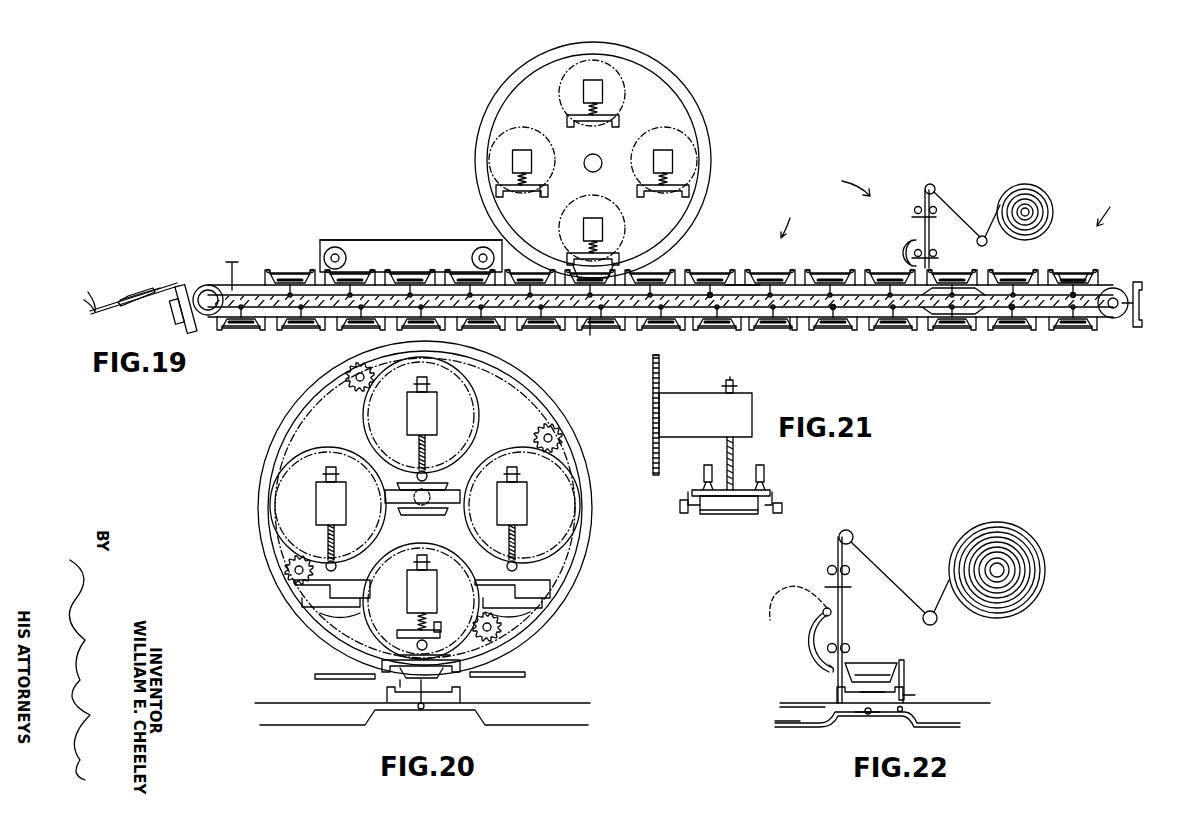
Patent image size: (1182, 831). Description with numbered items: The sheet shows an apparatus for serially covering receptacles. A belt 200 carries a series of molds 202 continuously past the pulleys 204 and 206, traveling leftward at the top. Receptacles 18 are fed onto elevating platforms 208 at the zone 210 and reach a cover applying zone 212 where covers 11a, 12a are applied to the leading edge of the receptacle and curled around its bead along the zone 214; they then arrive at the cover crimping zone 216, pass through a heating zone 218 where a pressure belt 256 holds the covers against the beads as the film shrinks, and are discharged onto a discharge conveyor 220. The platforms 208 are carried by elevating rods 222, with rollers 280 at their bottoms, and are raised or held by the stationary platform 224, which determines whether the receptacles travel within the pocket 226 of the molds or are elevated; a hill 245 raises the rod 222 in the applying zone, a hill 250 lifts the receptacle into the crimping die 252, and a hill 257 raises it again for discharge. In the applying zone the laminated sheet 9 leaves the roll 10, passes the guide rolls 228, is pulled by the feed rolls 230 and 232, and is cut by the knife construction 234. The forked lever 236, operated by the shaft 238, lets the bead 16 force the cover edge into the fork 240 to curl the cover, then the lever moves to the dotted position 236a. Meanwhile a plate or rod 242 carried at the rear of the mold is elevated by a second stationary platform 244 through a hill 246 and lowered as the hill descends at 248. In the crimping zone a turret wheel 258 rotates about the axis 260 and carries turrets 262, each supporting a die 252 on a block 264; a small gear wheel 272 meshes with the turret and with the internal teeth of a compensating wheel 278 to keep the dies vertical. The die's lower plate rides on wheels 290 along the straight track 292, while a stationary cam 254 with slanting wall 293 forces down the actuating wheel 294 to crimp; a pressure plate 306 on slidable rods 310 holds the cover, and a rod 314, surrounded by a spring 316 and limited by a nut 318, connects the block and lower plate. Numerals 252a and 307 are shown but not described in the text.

In FIG. 19, the laminated sheet 9 is at (952, 203).
In FIG. 22, the laminated sheet 9 is at (887, 571).
In FIG. 19, the roll 10 is at (1040, 190).
In FIG. 22, the roll 10 is at (1033, 555).
In FIG. 19, the cover 11a is at (125, 290).
In FIG. 19, the cover 12a is at (500, 265).
In FIG. 22, the bead 16 is at (847, 665).
In FIG. 19, the receptacle 18 is at (138, 290).
In FIG. 20, the receptacle 18 is at (398, 662).
In FIG. 22, the receptacle 18 is at (880, 670).
In FIG. 19, the belt 200 is at (1047, 287).
In FIG. 20, the belt 200 is at (573, 702).
In FIG. 22, the belt 200 is at (977, 703).
In FIG. 19, the mold 202 is at (178, 318).
In FIG. 22, the mold 202 is at (857, 692).
In FIG. 19, the pulley 204 is at (203, 291).
In FIG. 19, the pulley 206 is at (1138, 285).
In FIG. 19, the elevating platform 208 is at (1073, 268).
In FIG. 22, the elevating platform 208 is at (880, 683).
In FIG. 19, the zone 210 is at (1113, 207).
In FIG. 19, the cover applying zone 212 is at (841, 183).
In FIG. 19, the zone 214 is at (802, 220).
In FIG. 19, the cover crimping zone 216 is at (633, 237).
In FIG. 19, the heating zone 218 is at (371, 232).
In FIG. 19, the discharge conveyor 220 is at (86, 296).
In FIG. 19, the elevating rod 222 is at (717, 270).
In FIG. 20, the elevating rod 222 is at (443, 680).
In FIG. 22, the elevating rod 222 is at (900, 693).
In FIG. 19, the stationary platform 224 is at (737, 270).
In FIG. 20, the stationary platform 224 is at (424, 735).
In FIG. 22, the stationary platform 224 is at (790, 727).
In FIG. 19, the pocket 226 is at (793, 330).
In FIG. 20, the pocket 226 is at (407, 690).
In FIG. 22, the pocket 226 is at (857, 694).
In FIG. 19, the guide roll 228 is at (933, 185).
In FIG. 22, the guide roll 228 is at (850, 531).
In FIG. 19, the feed roll 230 is at (917, 207).
In FIG. 22, the feed roll 230 is at (830, 563).
In FIG. 19, the feed roll 232 is at (936, 257).
In FIG. 22, the feed roll 232 is at (850, 645).
In FIG. 19, the knife construction 234 is at (915, 218).
In FIG. 22, the knife construction 234 is at (830, 585).
In FIG. 19, the forked lever 236 is at (908, 251).
In FIG. 22, the forked lever 236 is at (800, 638).
In FIG. 22, the position of forked lever 236a is at (775, 596).
In FIG. 22, the shaft 238 is at (833, 610).
In FIG. 22, the fork 240 is at (828, 672).
In FIG. 22, the plate or rod 242 is at (905, 666).
In FIG. 22, the second stationary platform 244 is at (947, 720).
In FIG. 19, the hill 245 is at (947, 330).
In FIG. 22, the hill 245 is at (857, 717).
In FIG. 22, the hill 246 is at (913, 718).
In FIG. 22, the descent of hill 248 is at (805, 708).
In FIG. 19, the hill 250 is at (590, 333).
In FIG. 20, the hill 250 is at (430, 712).
In FIG. 19, the crimping die 252 is at (618, 120).
In FIG. 20, the crimping die 252 is at (463, 495).
In FIG. 21, the crimping die 252 is at (667, 500).
In FIG. 19, the plate end 252a is at (550, 190).
In FIG. 20, the stationary cam 254 is at (437, 627).
In FIG. 21, the stationary cam 254 is at (704, 467).
In FIG. 19, the pressure belt 256 is at (380, 272).
In FIG. 19, the hill 257 is at (237, 290).
In FIG. 19, the turret wheel 258 is at (648, 83).
In FIG. 20, the turret wheel 258 is at (302, 430).
In FIG. 20, the axis 260 is at (387, 513).
In FIG. 19, the turret 262 is at (558, 98).
In FIG. 20, the turret 262 is at (497, 430).
In FIG. 21, the turret 262 is at (653, 372).
In FIG. 19, the block 264 is at (600, 83).
In FIG. 20, the block 264 is at (410, 400).
In FIG. 21, the block 264 is at (743, 402).
In FIG. 20, the small gear wheel 272 is at (347, 370).
In FIG. 19, the compensating wheel 278 is at (512, 80).
In FIG. 20, the compensating wheel 278 is at (293, 404).
In FIG. 21, the roller 280 is at (658, 358).
In FIG. 21, the wheel 290 is at (777, 497).
In FIG. 20, the straight track 292 is at (335, 676).
In FIG. 21, the straight track 292 is at (782, 507).
In FIG. 20, the slanting wall 293 is at (460, 660).
In FIG. 21, the actuating wheel 294 is at (767, 487).
In FIG. 20, the pressure plate 306 is at (320, 613).
In FIG. 21, the pressure plate 306 is at (742, 511).
In FIG. 19, the belt frame 307 is at (447, 240).
In FIG. 20, the slidable rod 310 is at (302, 598).
In FIG. 21, the slidable rod 310 is at (717, 505).
In FIG. 20, the rod 314 is at (420, 447).
In FIG. 21, the rod 314 is at (734, 384).
In FIG. 20, the spring 316 is at (423, 457).
In FIG. 21, the spring 316 is at (735, 448).
In FIG. 20, the nut 318 is at (428, 383).
In FIG. 21, the nut 318 is at (723, 388).